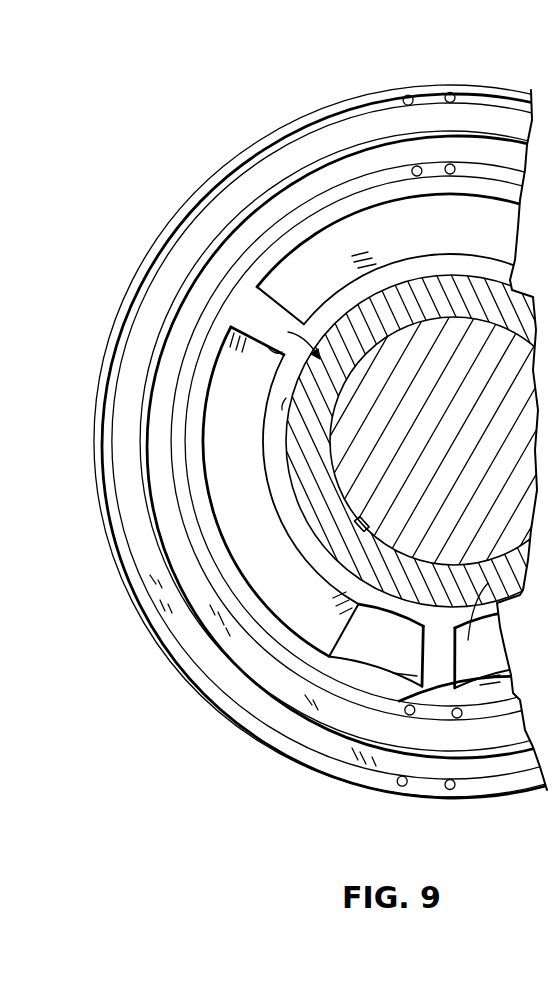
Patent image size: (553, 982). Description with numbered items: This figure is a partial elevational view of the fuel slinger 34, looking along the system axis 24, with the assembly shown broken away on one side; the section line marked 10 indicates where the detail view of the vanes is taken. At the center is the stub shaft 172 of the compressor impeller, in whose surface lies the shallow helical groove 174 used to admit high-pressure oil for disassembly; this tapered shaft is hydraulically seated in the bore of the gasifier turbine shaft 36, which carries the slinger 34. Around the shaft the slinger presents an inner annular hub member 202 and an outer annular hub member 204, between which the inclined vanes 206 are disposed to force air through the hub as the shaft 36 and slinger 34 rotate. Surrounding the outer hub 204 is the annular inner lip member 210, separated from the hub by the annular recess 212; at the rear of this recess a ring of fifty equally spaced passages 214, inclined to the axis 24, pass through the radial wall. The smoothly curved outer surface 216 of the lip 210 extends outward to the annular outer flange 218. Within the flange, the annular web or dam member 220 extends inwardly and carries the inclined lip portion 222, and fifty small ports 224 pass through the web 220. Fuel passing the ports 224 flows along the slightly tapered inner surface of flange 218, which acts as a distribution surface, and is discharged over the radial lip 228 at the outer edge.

The fuel slinger 34 is at (252, 116).
The radial lip 228 is at (313, 111).
The annular web or dam member 220 is at (206, 197).
The inclined lip portion 222 is at (177, 260).
The outer surface of lip 216 is at (274, 204).
The annular outer flange 218 is at (245, 735).
The annular inner lip member 210 is at (380, 172).
The annular recess 212 is at (503, 177).
The passages 214 is at (458, 164).
The ports 224 is at (450, 92).
The outer annular hub member 204 is at (207, 383).
The vanes 206 is at (341, 384).
The system axis 24 is at (455, 442).
The helical groove 174 is at (358, 512).
The inner annular hub member 202 is at (285, 399).
The stub shaft 172 is at (532, 323).
The gasifier turbine shaft 36 is at (494, 589).
The section line 10 is at (343, 218).